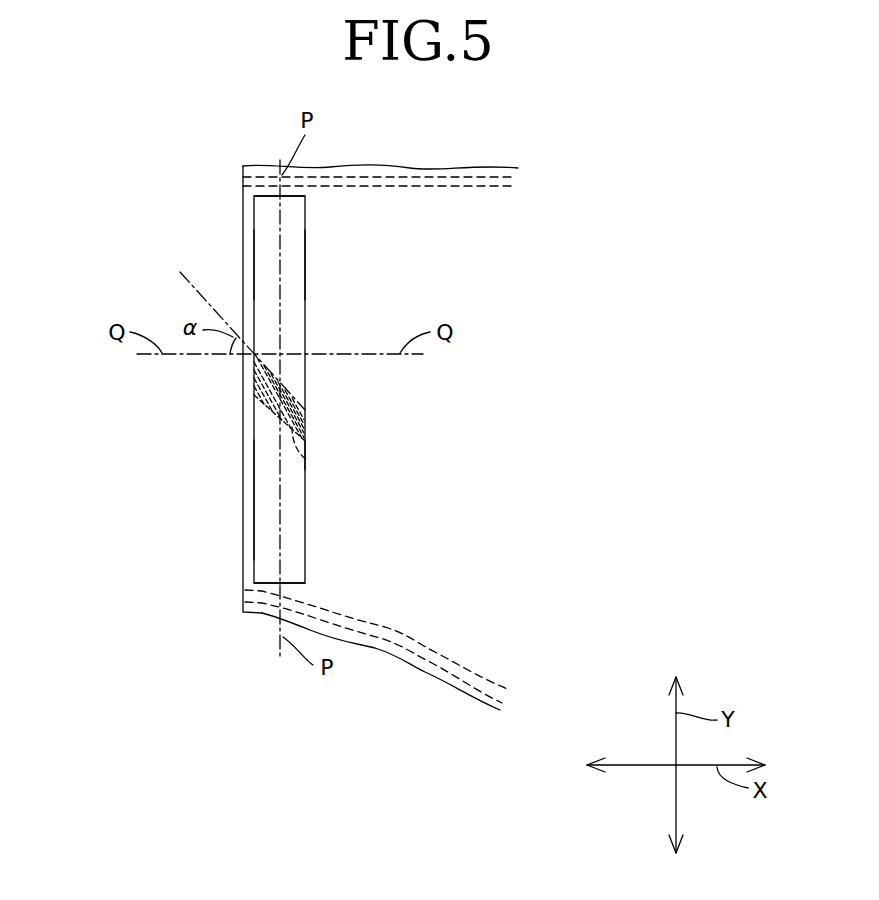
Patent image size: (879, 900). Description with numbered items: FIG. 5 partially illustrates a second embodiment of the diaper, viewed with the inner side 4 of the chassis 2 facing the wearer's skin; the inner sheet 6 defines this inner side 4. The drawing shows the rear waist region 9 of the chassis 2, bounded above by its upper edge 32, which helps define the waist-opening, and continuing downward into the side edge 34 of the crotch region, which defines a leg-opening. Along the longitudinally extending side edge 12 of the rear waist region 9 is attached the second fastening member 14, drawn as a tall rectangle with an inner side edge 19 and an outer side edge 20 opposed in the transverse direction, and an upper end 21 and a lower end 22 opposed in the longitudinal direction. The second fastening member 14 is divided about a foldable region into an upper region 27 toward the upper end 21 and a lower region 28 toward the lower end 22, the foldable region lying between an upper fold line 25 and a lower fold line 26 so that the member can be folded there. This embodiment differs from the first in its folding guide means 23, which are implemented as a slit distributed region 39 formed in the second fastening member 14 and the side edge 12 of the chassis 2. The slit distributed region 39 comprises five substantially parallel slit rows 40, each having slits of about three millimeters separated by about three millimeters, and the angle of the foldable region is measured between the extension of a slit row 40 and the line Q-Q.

The liquid-absorbent chassis 2 is at (486, 147).
The inner side 4 is at (428, 464).
The inner sheet 6 is at (487, 239).
The rear waist region 9 is at (433, 207).
The side edge of rear waist region 12 is at (249, 551).
The second fastening member 14 is at (320, 457).
The inner side edge of second fastening member 19 is at (307, 265).
The outer side edge of second fastening member 20 is at (253, 260).
The upper end of second fastening member 21 is at (268, 195).
The lower end of second fastening member 22 is at (268, 587).
The folding guide means 23 is at (349, 398).
The upper fold line 25 is at (290, 388).
The lower fold line 26 is at (307, 460).
The upper region 27 is at (265, 220).
The lower region 28 is at (263, 467).
The upper edge of rear waist region 32 is at (382, 168).
The side edge of crotch region 34 is at (373, 647).
The slit distributed region 39 is at (307, 420).
The slit row 40 is at (267, 407).